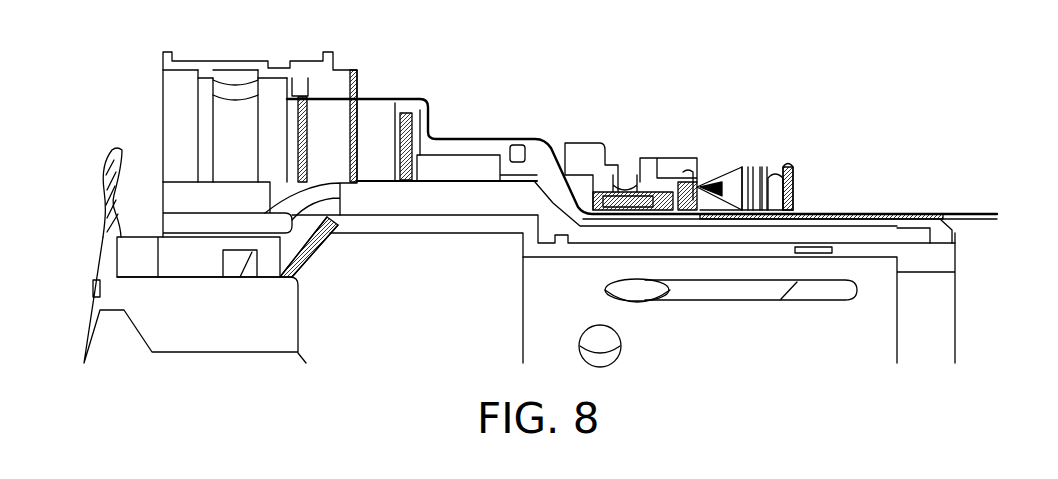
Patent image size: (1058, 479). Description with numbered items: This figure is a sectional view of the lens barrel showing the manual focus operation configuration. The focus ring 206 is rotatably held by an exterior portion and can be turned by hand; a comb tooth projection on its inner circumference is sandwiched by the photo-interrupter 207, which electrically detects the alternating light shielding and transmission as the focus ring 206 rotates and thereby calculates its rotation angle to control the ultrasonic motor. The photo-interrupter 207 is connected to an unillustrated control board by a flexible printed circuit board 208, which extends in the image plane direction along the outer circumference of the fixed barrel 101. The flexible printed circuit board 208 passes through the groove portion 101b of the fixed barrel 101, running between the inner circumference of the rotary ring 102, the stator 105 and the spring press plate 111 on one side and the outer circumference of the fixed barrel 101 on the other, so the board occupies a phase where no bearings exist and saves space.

The fixed barrel 101 is at (484, 138).
The groove portion 101b is at (575, 192).
The rotary ring 102 is at (610, 163).
The stator 105 is at (720, 170).
The spring press plate 111 is at (788, 165).
The focus ring 206 is at (237, 62).
The photo-interrupter 207 is at (310, 96).
The flexible printed circuit board 208 is at (372, 100).